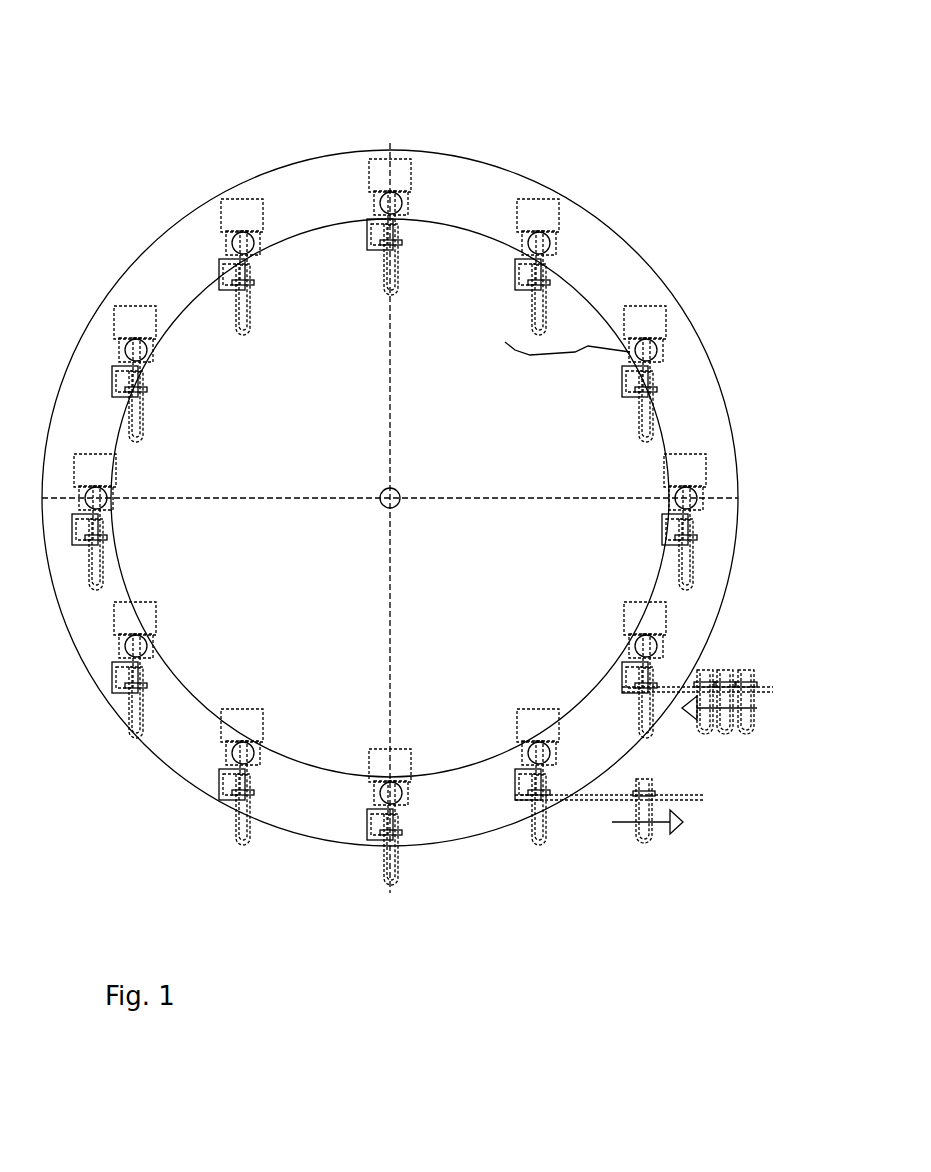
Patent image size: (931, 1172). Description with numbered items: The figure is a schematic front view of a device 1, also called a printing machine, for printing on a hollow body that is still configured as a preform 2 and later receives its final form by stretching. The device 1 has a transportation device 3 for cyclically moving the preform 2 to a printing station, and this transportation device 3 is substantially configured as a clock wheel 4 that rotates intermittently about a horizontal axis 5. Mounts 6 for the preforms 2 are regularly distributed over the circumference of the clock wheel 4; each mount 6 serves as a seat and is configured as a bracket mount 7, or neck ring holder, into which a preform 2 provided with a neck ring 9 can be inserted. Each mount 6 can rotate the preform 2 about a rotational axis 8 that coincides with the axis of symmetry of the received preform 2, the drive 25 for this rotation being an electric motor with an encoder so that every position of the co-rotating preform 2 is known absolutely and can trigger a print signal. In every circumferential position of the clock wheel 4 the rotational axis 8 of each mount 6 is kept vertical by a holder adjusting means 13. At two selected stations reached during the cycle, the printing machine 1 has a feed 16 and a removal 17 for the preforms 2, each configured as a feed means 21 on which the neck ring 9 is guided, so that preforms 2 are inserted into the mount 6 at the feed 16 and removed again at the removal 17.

The device 1 is at (662, 112).
The preform 2 is at (545, 310).
The transportation device 3 is at (122, 222).
The clock wheel 4 is at (390, 428).
The horizontal axis 5 is at (383, 507).
The mount 6 is at (592, 329).
The bracket mount 7 is at (537, 268).
The rotational axis 8 is at (526, 268).
The neck ring 9 is at (548, 281).
The holder adjusting means 13 is at (518, 236).
The feed 16 is at (726, 681).
The removal 17 is at (627, 822).
The feed means 21 is at (678, 797).
The drive 25 is at (534, 210).